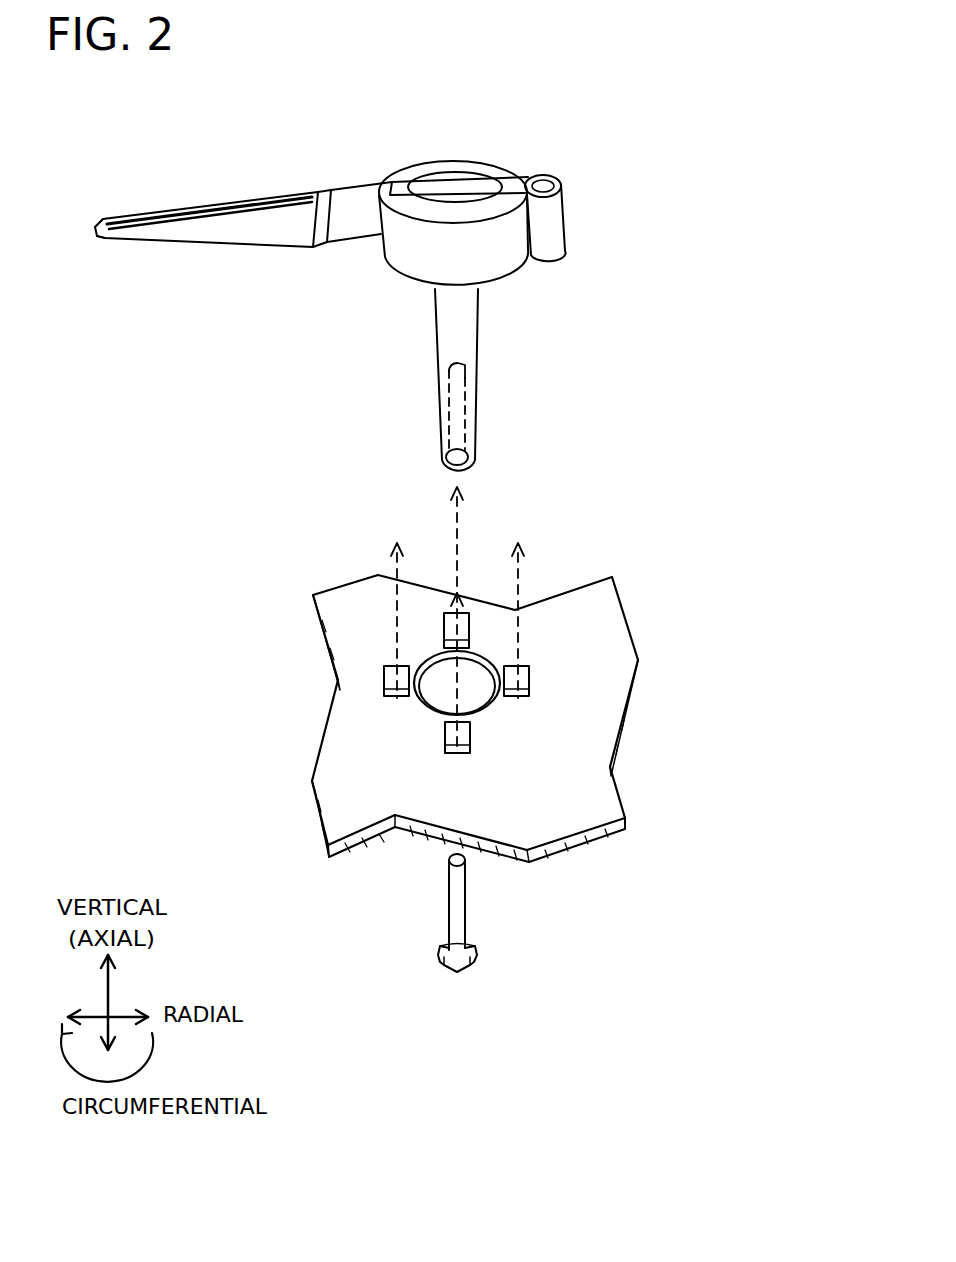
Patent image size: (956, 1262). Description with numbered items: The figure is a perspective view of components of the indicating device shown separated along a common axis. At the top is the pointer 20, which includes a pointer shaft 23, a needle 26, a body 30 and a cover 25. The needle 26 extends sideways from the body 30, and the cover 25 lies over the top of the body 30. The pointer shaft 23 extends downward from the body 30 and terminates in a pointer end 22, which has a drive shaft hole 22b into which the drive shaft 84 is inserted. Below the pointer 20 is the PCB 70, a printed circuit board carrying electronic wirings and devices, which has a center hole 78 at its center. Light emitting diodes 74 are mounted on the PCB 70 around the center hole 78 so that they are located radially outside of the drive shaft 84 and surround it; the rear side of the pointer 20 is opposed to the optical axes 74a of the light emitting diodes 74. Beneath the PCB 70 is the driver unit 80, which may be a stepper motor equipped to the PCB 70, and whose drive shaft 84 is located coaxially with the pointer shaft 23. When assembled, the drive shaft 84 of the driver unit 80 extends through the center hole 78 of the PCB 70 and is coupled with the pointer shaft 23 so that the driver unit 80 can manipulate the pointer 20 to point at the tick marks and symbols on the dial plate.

The pointer 20 is at (702, 213).
The pointer end 22 is at (443, 455).
The drive shaft hole 22b is at (462, 378).
The pointer shaft 23 is at (477, 330).
The cover 25 is at (484, 164).
The needle 26 is at (263, 181).
The body 30 is at (545, 209).
The PCB 70 is at (726, 700).
The light emitting diodes 74 is at (469, 627).
The optical axes 74a is at (380, 560).
The center hole 78 is at (500, 668).
The driver unit 80 is at (728, 929).
The drive shaft 84 is at (467, 902).